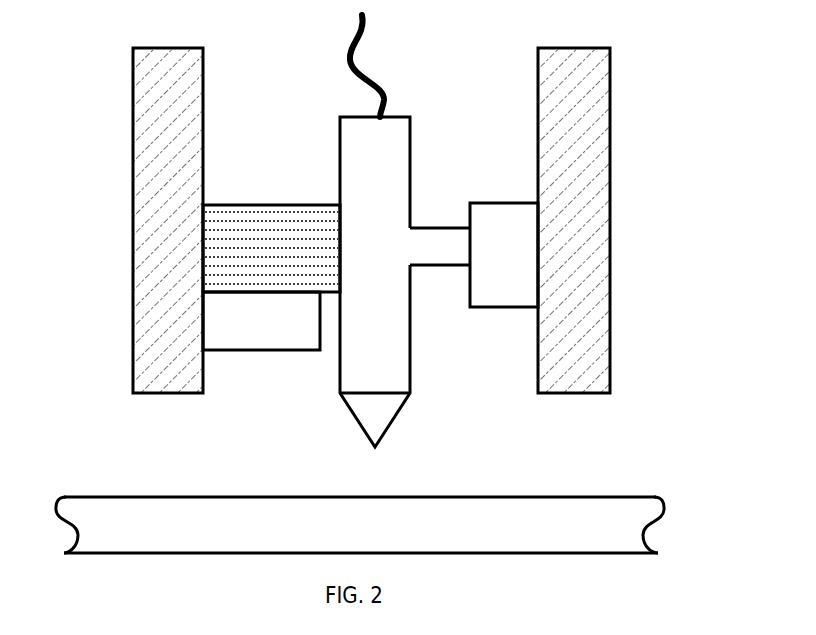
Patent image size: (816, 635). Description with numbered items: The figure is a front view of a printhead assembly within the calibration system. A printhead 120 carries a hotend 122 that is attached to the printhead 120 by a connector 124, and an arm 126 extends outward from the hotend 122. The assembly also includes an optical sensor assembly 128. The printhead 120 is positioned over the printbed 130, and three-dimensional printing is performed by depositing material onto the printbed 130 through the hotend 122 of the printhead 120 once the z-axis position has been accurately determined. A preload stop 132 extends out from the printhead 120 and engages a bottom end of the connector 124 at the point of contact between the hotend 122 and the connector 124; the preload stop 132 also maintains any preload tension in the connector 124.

The printhead 120 is at (133, 327).
The hotend 122 is at (412, 152).
The connector 124 is at (302, 203).
The arm 126 is at (440, 263).
The optical sensor assembly 128 is at (482, 203).
The printbed 130 is at (620, 497).
The preload stop 132 is at (232, 352).